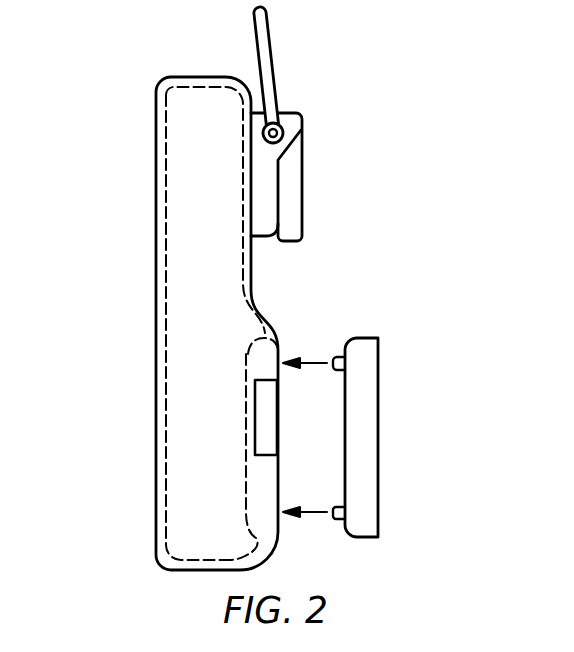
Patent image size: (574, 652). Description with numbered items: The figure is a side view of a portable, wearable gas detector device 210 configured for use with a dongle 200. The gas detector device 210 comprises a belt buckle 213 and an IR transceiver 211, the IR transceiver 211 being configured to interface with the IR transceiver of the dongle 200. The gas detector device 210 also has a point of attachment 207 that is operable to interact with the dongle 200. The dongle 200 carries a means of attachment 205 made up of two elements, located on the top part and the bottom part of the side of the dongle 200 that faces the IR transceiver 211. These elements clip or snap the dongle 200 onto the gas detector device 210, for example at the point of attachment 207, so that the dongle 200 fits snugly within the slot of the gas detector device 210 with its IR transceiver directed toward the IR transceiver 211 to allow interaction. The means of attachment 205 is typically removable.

The dongle 200 is at (408, 444).
The means of attachment 205 is at (336, 372).
The point of attachment 207 is at (256, 406).
The gas detector device 210 is at (139, 63).
The IR transceiver 211 is at (292, 329).
The belt buckle 213 is at (320, 94).